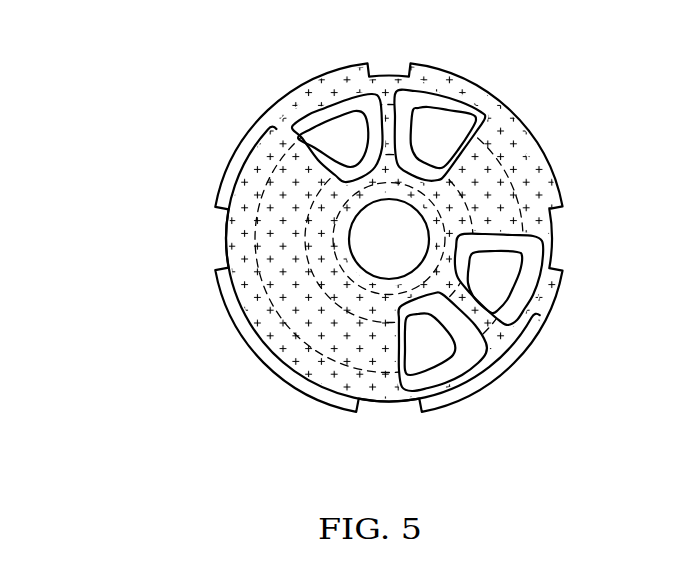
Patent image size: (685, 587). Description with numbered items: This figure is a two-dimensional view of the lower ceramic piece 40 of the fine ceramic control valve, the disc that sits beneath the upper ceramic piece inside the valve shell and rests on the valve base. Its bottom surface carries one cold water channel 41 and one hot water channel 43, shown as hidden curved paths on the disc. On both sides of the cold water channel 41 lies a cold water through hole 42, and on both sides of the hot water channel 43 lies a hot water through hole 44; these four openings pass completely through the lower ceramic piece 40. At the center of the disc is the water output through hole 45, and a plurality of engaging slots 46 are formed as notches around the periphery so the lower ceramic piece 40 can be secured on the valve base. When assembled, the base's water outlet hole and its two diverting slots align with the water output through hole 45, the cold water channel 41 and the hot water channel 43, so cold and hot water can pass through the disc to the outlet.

The lower ceramic piece 40 is at (516, 391).
The cold water channel 41 is at (268, 312).
The cold water through hole 42 is at (331, 128).
The hot water channel 43 is at (520, 183).
The hot water through hole 44 is at (448, 130).
The water output through hole 45 is at (363, 226).
The engaging slot 46 is at (218, 238).